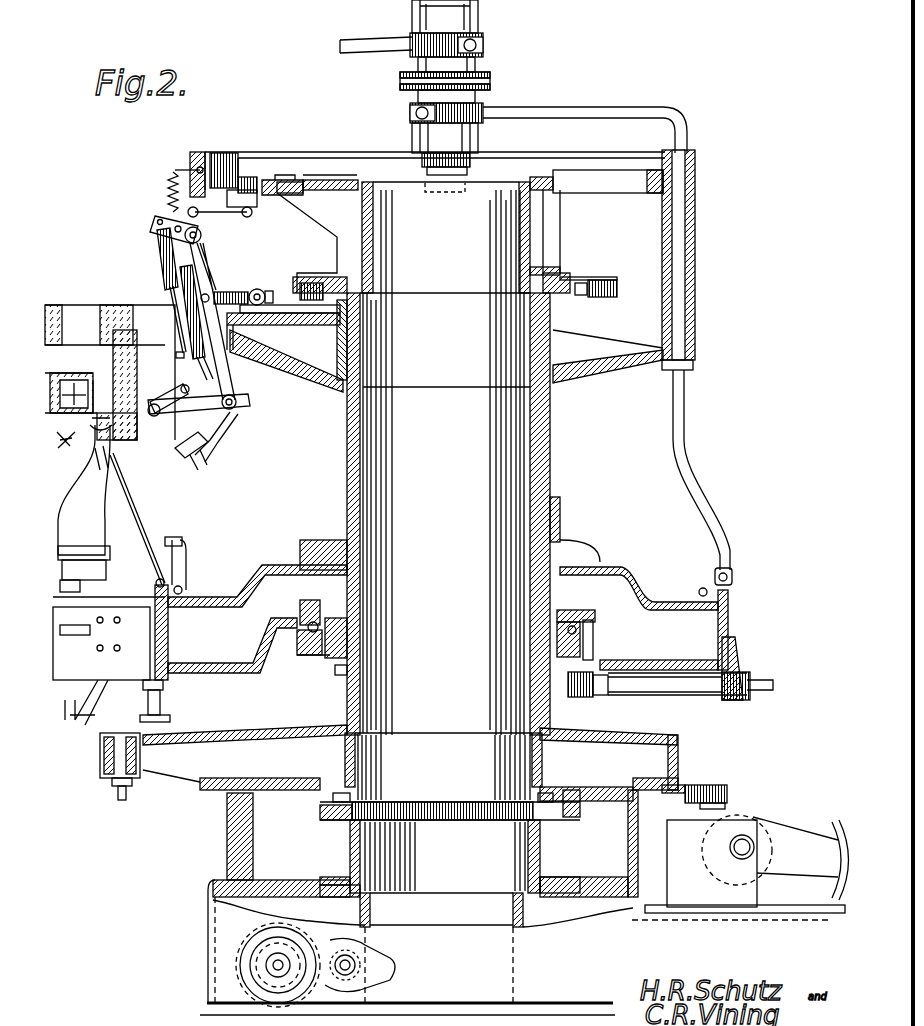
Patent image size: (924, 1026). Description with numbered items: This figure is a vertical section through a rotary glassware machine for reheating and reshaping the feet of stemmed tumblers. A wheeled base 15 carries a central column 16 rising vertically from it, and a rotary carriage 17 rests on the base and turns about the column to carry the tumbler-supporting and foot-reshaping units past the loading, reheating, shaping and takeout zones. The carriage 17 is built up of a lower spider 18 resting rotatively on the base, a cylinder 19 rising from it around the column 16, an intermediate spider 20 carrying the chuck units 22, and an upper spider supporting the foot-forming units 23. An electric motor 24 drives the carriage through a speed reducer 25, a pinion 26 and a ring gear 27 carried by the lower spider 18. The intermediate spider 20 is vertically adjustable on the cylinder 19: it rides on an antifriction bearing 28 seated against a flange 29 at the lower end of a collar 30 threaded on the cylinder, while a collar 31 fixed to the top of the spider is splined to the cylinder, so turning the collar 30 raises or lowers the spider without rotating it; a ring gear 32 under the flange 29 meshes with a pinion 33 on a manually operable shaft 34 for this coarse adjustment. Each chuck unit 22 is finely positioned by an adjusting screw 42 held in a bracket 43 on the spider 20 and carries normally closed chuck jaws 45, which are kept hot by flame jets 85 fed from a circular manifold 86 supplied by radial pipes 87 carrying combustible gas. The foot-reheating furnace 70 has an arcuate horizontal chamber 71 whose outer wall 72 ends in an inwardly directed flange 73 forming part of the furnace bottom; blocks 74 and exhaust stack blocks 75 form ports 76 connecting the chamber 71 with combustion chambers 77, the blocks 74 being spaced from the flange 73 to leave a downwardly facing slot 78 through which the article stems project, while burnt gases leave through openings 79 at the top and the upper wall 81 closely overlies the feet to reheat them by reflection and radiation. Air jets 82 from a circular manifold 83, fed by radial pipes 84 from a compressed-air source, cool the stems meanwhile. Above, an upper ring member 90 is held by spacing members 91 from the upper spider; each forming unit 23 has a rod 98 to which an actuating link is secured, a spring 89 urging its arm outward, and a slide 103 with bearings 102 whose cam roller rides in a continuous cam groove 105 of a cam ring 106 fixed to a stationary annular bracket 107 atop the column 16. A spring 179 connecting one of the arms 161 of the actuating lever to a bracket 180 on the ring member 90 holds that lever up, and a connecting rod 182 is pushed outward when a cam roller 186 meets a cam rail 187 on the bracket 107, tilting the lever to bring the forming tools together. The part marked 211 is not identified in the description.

The wheeled base 15 is at (210, 905).
The central column 16 is at (450, 592).
The rotary carriage 17 is at (627, 546).
The lower spider 18 is at (176, 756).
The cylinder 19 is at (347, 686).
The intermediate spider 20 is at (257, 619).
The chuck unit 22 is at (148, 584).
The foot forming unit 23 is at (225, 440).
The electric motor 24 is at (838, 825).
The speed reducer 25 is at (738, 867).
The pinion 26 is at (733, 790).
The ring gear 27 is at (215, 803).
The antifriction bearing 28 is at (585, 612).
The flange 29 is at (596, 634).
The collar 30 is at (322, 600).
The collar 31 is at (560, 515).
The ring gear 32 is at (300, 657).
The pinion 33 is at (588, 700).
The manually operable shaft 34 is at (700, 692).
The adjusting screw 42 is at (168, 719).
The bracket 43 is at (163, 695).
The chuck jaws 45 is at (108, 570).
The foot reheating furnace 70 is at (140, 340).
The arcuate horizontal chamber 71 is at (100, 397).
The outer wall 72 is at (138, 382).
The inwardly directed flange 73 is at (102, 440).
The blocks 74 is at (68, 445).
The exhaust stack blocks 75 is at (69, 379).
The ports 76 is at (86, 395).
The combustion chambers 77 is at (70, 440).
The arcuate bottom slot 78 is at (110, 462).
The openings 79 is at (62, 313).
The upper wall 81 is at (72, 395).
The air jets 82 is at (138, 525).
The circular manifold 83 is at (165, 583).
The radially extending pipes 84 is at (662, 107).
The flame-producing jets 85 is at (176, 537).
The circular manifold 86 is at (183, 590).
The radially extending pipes 87 is at (400, 40).
The spring 89 is at (232, 282).
The upper ring member 90 is at (601, 165).
The spacing members 91 is at (694, 262).
The rod 98 is at (208, 293).
The bearings 102 is at (258, 289).
The slide 103 is at (292, 318).
The cam groove 105 is at (300, 282).
The cam ring 106 is at (332, 278).
The annular bracket 107 is at (318, 205).
The arms 161 is at (150, 226).
The spring 179 is at (168, 191).
The bracket 180 is at (178, 170).
The connecting rod 182 is at (245, 215).
The cam roller 186 is at (254, 178).
The cam rail 187 is at (298, 180).
The web 211 is at (332, 380).